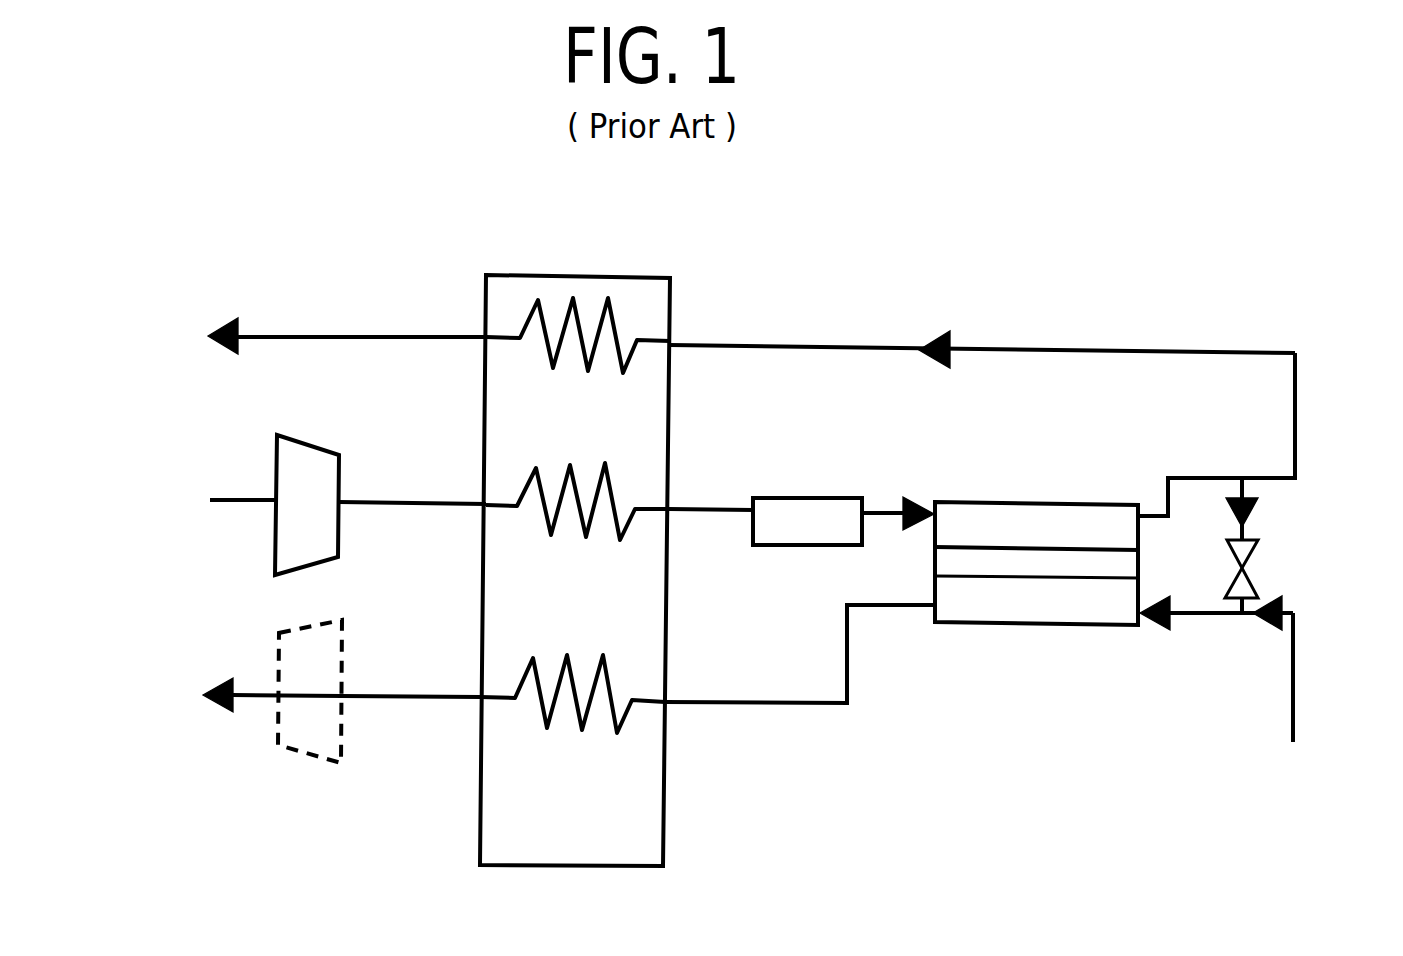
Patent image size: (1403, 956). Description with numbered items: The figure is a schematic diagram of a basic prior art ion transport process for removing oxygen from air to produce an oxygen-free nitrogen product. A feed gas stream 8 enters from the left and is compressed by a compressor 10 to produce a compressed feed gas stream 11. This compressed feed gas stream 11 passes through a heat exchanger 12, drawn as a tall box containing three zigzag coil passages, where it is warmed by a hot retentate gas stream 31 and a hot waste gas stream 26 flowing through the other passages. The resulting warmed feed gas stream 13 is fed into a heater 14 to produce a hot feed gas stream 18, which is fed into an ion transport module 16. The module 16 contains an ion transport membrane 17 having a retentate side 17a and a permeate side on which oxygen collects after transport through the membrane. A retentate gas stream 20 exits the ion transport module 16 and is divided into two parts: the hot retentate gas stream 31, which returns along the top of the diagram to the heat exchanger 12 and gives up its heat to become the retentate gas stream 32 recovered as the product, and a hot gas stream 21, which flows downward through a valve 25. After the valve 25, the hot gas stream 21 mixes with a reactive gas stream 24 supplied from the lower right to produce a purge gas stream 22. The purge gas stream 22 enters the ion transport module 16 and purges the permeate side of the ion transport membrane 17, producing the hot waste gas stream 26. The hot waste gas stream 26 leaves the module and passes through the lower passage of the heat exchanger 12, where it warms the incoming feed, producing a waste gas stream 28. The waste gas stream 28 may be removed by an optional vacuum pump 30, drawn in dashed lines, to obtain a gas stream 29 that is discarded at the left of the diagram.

The feed gas stream 8 is at (238, 500).
The compressor 10 is at (320, 455).
The compressed feed gas stream 11 is at (425, 502).
The heat exchanger 12 is at (672, 306).
The warmed feed gas stream 13 is at (711, 510).
The heater 14 is at (822, 498).
The ion transport module 16 is at (999, 502).
The ion transport membrane 17 is at (932, 560).
The retentate side 17a is at (1083, 548).
The hot feed gas stream 18 is at (879, 513).
The retentate gas stream 20 is at (1190, 478).
The hot gas stream 21 is at (1245, 530).
The purge gas stream 22 is at (1195, 614).
The reactive gas stream 24 is at (1295, 668).
The valve 25 is at (1248, 565).
The hot waste gas stream 26 is at (808, 704).
The waste gas stream 28 is at (437, 698).
The gas stream 29 is at (260, 696).
The vacuum pump 30 is at (345, 728).
The hot retentate gas stream 31 is at (868, 348).
The retentate gas stream 32 is at (372, 337).